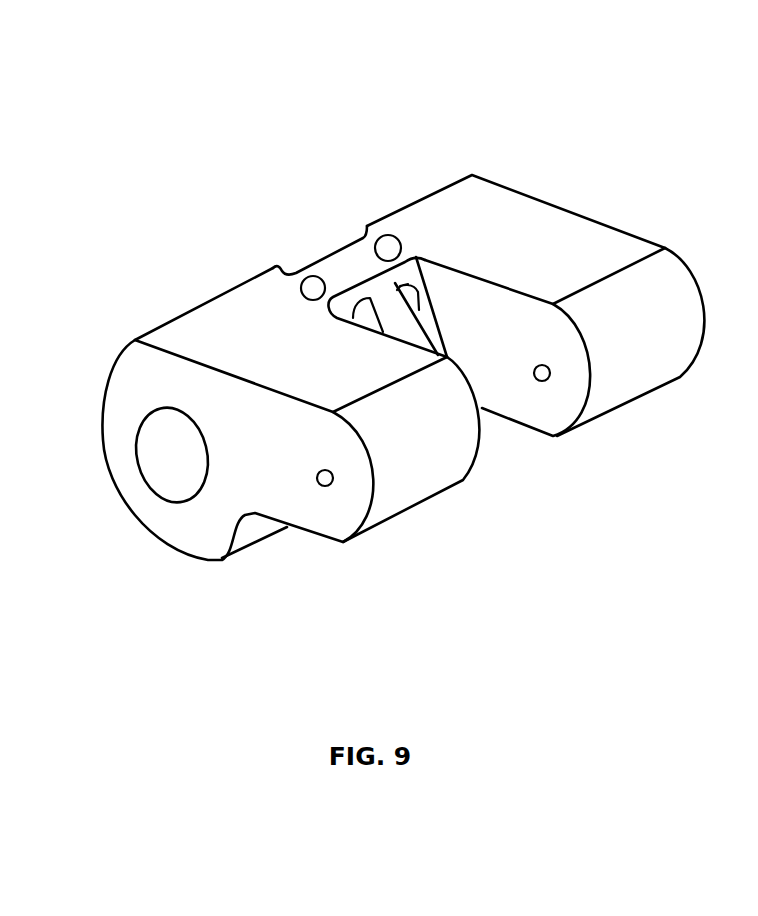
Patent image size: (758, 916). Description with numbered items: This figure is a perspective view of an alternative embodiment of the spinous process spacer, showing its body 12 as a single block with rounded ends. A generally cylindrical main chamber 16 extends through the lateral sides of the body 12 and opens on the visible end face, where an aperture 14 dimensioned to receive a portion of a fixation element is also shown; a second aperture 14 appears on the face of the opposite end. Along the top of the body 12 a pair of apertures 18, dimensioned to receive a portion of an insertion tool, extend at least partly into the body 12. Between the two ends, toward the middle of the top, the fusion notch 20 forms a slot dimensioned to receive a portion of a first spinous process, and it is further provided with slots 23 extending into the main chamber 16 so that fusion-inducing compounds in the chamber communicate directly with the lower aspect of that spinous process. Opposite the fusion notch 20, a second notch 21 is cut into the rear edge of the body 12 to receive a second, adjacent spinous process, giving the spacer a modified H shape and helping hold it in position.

The body 12 is at (235, 220).
The aperture 14 is at (325, 482).
The main chamber 16 is at (177, 490).
The apertures 18 is at (312, 290).
The fusion notch 20 is at (389, 273).
The second notch 21 is at (310, 262).
The slots 23 is at (363, 310).